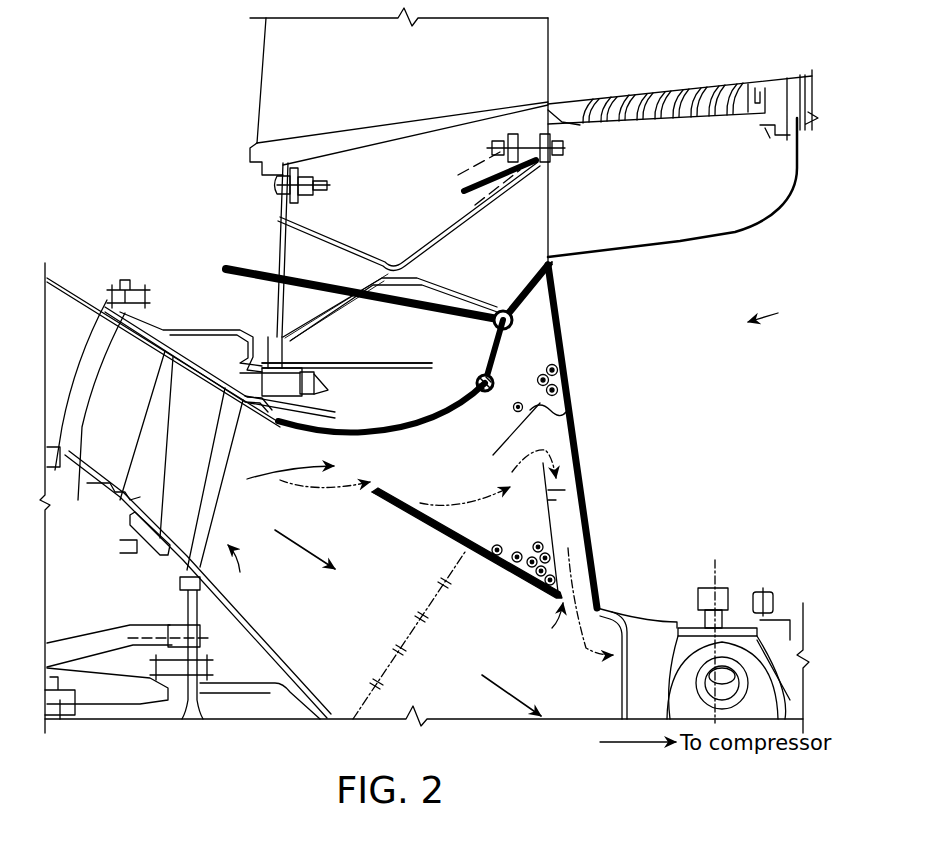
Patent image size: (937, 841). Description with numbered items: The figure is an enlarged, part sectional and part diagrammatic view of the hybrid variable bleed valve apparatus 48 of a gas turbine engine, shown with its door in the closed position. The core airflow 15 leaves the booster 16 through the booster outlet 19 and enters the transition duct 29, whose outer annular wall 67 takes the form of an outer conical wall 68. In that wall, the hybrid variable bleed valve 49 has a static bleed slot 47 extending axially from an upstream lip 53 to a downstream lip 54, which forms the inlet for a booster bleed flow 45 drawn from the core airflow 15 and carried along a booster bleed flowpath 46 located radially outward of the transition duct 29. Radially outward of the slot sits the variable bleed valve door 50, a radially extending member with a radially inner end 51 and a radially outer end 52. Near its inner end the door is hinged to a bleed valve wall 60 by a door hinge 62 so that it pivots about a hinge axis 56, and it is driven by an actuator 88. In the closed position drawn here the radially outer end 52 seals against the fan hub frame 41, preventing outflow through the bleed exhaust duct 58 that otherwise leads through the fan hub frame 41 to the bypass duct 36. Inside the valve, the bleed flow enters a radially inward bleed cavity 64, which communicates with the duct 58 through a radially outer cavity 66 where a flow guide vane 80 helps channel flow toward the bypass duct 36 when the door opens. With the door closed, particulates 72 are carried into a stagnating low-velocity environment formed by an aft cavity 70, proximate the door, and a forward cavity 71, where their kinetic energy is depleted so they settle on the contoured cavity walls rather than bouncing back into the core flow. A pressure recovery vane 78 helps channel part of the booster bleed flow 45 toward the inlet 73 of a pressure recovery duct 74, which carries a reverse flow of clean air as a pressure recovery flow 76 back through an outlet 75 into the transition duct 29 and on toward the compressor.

The core airflow 15 is at (297, 550).
The booster 16 is at (97, 427).
The booster outlet 19 is at (242, 571).
The transition duct 29 is at (342, 613).
The bypass duct 36 is at (649, 70).
The fan hub frame 41 is at (560, 378).
The booster bleed flow 45 is at (328, 505).
The booster bleed flowpath 46 is at (274, 420).
The static bleed slot 47 is at (297, 460).
The hybrid variable bleed valve apparatus 48 is at (777, 318).
The hybrid variable bleed valve 49 is at (511, 399).
The variable bleed valve door 50 is at (527, 285).
The radially inner end 51 is at (494, 352).
The radially outer end 52 is at (540, 262).
The upstream lip 53 is at (277, 424).
The downstream lip 54 is at (374, 500).
The hinge axis 56 is at (474, 384).
The bleed exhaust duct 58 is at (685, 198).
The bleed valve wall 60 is at (384, 429).
The door hinge 62 is at (474, 384).
The radially inward bleed cavity 64 is at (412, 493).
The radially outer cavity 66 is at (375, 216).
The outer annular wall 67 is at (474, 560).
The outer conical wall 68 is at (520, 578).
The aft cavity 70 is at (510, 368).
The forward cavity 71 is at (477, 533).
The particulates 72 is at (518, 546).
The inlet 73 is at (527, 444).
The pressure recovery duct 74 is at (580, 492).
The outlet 75 is at (555, 629).
The pressure recovery flow 76 is at (583, 664).
The pressure recovery vane 78 is at (566, 414).
The flow guide vane 80 is at (482, 185).
The actuator 88 is at (238, 268).